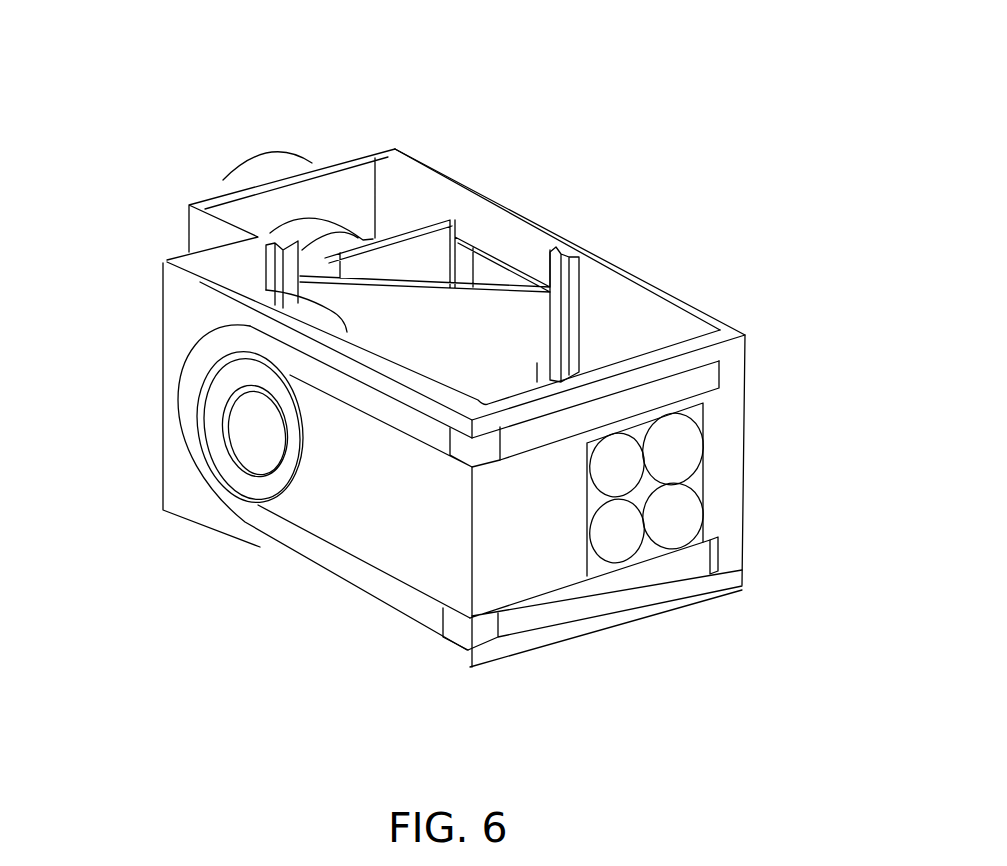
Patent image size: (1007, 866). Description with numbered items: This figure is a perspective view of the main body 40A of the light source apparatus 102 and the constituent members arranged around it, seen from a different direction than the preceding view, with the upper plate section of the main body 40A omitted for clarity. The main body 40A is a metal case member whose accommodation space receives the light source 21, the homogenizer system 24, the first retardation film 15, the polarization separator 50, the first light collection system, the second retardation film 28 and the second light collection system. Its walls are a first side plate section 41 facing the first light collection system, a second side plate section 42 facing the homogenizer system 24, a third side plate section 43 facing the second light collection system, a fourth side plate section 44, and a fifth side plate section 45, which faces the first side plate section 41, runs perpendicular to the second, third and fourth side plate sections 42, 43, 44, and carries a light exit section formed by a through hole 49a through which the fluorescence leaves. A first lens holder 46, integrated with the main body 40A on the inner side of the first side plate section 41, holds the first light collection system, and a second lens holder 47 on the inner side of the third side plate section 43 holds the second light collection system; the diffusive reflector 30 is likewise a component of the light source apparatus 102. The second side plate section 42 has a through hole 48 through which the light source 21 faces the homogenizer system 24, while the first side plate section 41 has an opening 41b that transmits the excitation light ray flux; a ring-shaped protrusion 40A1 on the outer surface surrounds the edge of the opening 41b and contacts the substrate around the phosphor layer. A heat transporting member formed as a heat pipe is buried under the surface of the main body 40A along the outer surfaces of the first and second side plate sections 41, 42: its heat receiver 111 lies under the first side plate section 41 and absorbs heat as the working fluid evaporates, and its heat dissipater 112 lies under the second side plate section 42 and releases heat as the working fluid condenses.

The light source apparatus 102 is at (668, 103).
The diffusive reflector 30 is at (245, 150).
The second lens holder 47 is at (302, 227).
The second retardation film 28 is at (400, 250).
The polarization separator 50 is at (437, 307).
The fifth side plate section 45 is at (485, 200).
The through hole 49a is at (505, 278).
The first retardation film 15 is at (527, 363).
The homogenizer system 24 is at (583, 357).
The main body 40A is at (703, 298).
The third side plate section 43 is at (205, 198).
The first lens holder 46 is at (290, 289).
The opening 41b is at (232, 407).
The heat receiver 111 is at (193, 428).
The first side plate section 41 is at (187, 493).
The protrusion 40A1 is at (275, 487).
The fourth side plate section 44 is at (503, 657).
The heat dissipater 112 is at (537, 437).
The light source 21 is at (703, 513).
The through hole 48 is at (670, 515).
The second side plate section 42 is at (733, 420).